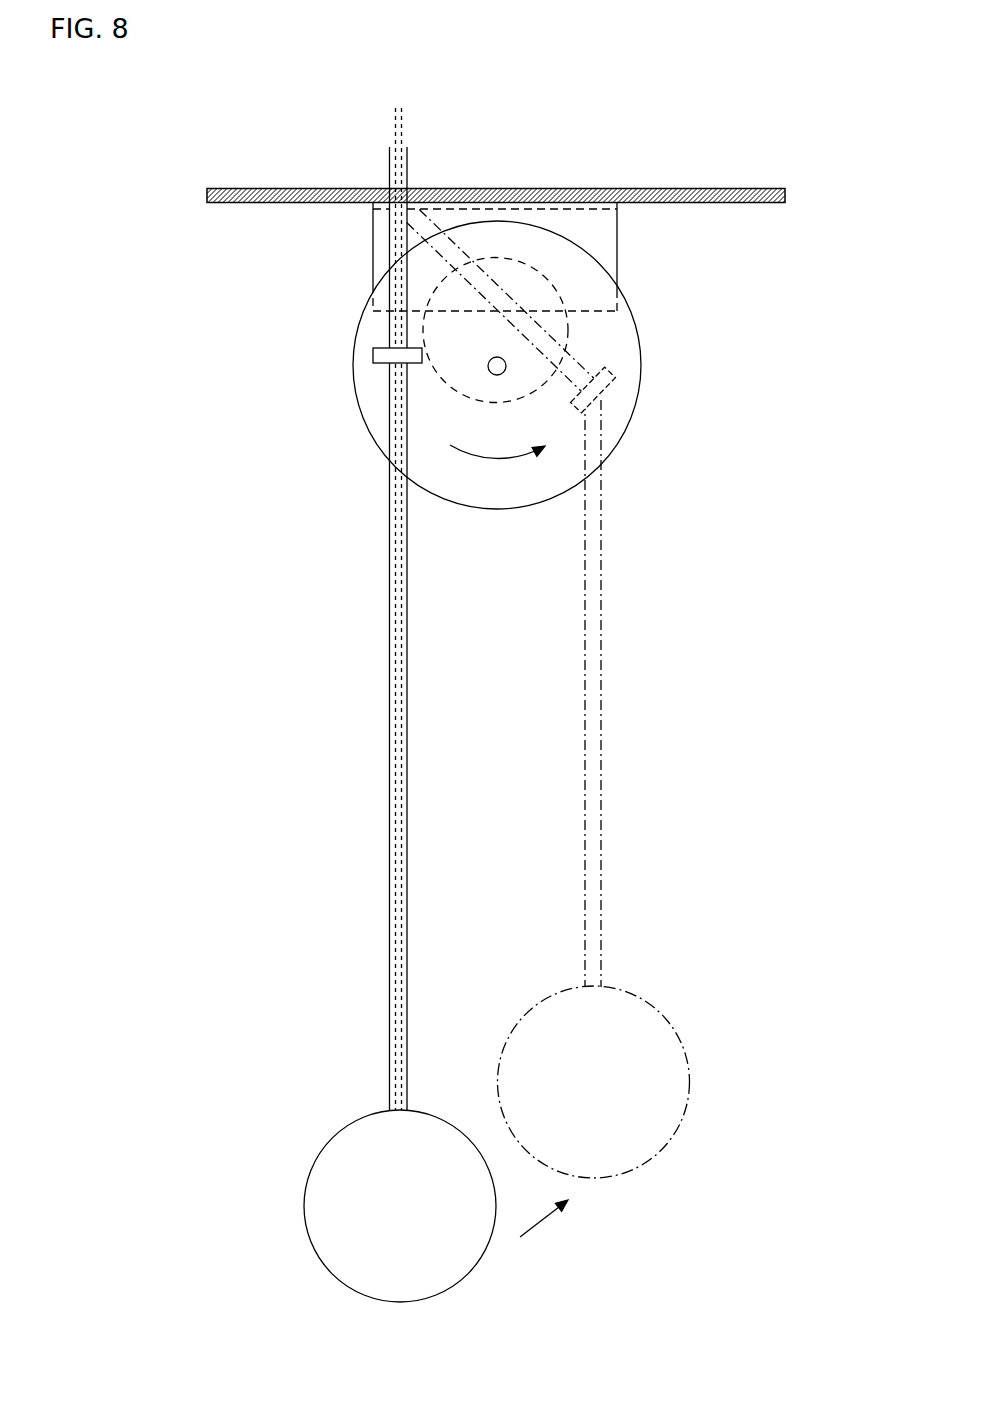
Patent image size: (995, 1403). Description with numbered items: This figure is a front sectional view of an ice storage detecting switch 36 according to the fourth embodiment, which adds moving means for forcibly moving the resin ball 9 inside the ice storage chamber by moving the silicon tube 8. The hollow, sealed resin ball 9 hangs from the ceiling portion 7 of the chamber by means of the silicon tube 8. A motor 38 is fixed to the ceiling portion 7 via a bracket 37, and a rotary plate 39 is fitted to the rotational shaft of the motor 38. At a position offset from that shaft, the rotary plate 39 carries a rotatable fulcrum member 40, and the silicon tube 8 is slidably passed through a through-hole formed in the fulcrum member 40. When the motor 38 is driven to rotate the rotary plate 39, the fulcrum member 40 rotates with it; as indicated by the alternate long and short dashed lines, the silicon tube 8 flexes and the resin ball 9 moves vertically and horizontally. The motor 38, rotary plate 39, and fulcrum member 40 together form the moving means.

The ceiling portion 7 is at (282, 203).
The silicon tube 8 is at (390, 688).
The resin ball 9 is at (305, 1183).
The ice storage detecting switch 36 is at (333, 530).
The bracket 37 is at (617, 240).
The motor 38 is at (560, 326).
The rotary plate 39 is at (495, 508).
The fulcrum member 40 is at (372, 360).